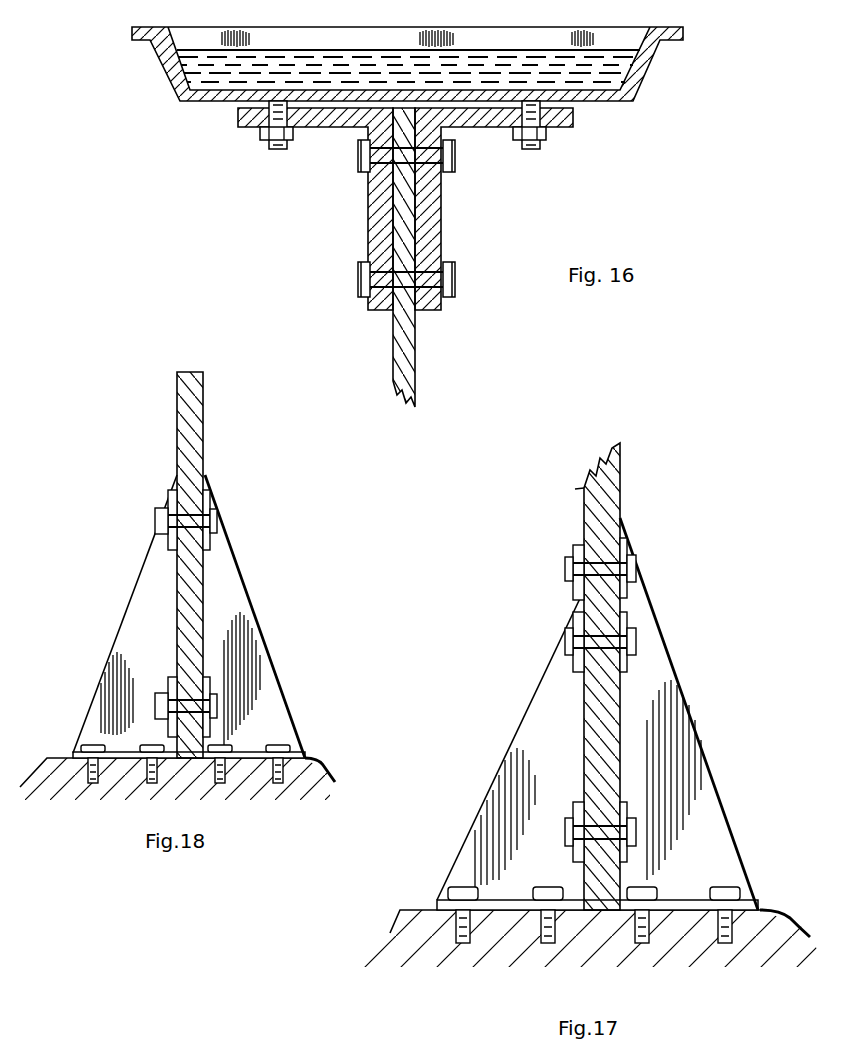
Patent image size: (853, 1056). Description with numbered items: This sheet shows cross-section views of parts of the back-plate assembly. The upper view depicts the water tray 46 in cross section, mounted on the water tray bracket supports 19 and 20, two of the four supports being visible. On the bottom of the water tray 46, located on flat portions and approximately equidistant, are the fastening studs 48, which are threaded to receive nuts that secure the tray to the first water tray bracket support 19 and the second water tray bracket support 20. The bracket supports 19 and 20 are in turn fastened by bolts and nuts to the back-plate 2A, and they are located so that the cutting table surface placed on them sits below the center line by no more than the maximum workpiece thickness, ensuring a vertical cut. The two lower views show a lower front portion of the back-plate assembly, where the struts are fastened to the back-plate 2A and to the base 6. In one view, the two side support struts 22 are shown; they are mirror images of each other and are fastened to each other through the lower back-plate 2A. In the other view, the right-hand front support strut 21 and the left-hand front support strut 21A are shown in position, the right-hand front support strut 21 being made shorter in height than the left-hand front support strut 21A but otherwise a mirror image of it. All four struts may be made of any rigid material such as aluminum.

In FIG. 16, the water tray 46 is at (642, 62).
In FIG. 16, the fastening studs 48 is at (258, 133).
In FIG. 16, the first water tray bracket support 19 is at (368, 212).
In FIG. 16, the second water tray bracket support 20 is at (441, 205).
In FIG. 16, the back-plate 2A is at (417, 365).
In FIG. 18, the back-plate 2A is at (205, 423).
In FIG. 17, the back-plate 2A is at (622, 488).
In FIG. 18, the side support struts 22 is at (117, 640).
In FIG. 17, the right-hand front support strut 21 is at (515, 717).
In FIG. 17, the left-hand front support strut 21A is at (690, 703).
In FIG. 18, the base 6 is at (310, 752).
In FIG. 17, the base 6 is at (763, 910).